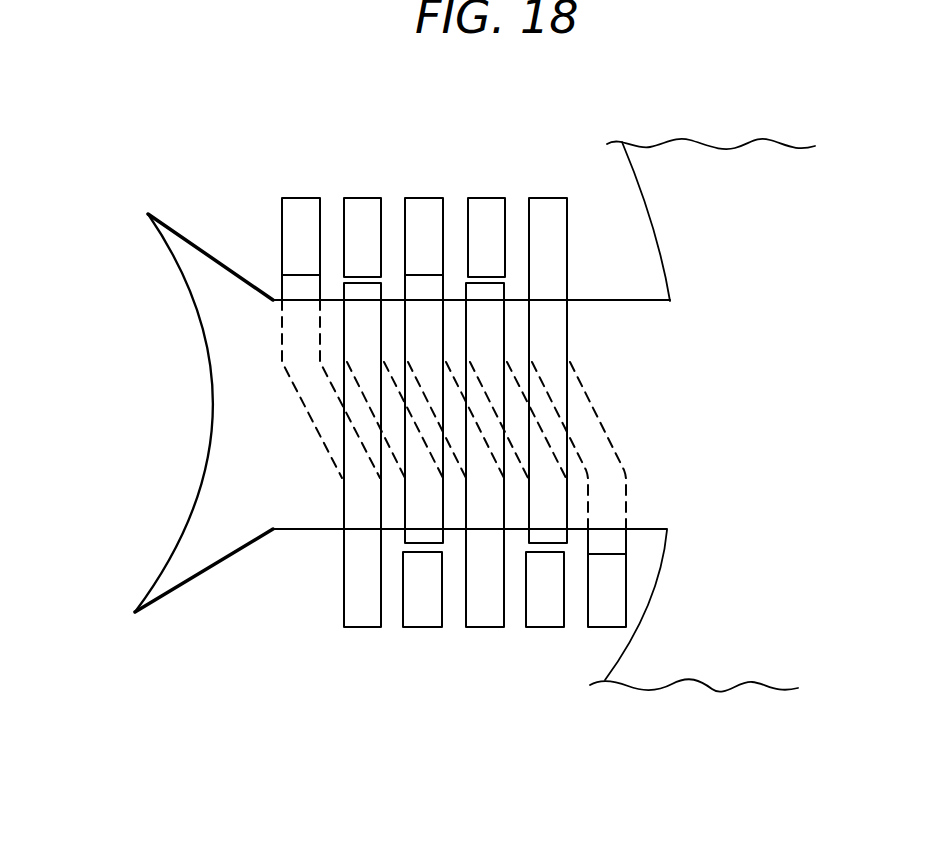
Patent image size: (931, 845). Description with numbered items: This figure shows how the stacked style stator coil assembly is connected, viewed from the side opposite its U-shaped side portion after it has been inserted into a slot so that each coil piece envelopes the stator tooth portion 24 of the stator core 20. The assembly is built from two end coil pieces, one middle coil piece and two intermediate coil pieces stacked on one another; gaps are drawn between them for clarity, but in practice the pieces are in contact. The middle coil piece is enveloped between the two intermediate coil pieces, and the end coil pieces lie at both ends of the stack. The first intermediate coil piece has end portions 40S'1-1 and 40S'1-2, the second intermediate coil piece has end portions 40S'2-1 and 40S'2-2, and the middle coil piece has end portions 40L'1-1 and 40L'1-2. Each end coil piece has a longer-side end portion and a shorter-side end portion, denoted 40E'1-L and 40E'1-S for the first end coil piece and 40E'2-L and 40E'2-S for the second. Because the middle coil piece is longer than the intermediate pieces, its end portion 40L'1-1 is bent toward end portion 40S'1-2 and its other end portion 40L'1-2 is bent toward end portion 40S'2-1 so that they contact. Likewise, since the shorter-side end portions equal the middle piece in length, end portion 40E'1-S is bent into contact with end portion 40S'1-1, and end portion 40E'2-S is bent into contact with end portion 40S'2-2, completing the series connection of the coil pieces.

The stator core 20 is at (700, 160).
The stator tooth portion 24 is at (265, 420).
The longer-side end portion of end coil piece 40E'1-L is at (287, 218).
The end portion of intermediate coil piece 40S'1-1 is at (388, 185).
The end portion of intermediate coil piece 40S'2-1 is at (492, 206).
The shorter-side end portion of end coil piece 40E'1-S is at (220, 455).
The end portion of middle coil piece 40L'1-1 is at (255, 370).
The end portion of middle coil piece 40L'1-2 is at (580, 455).
The shorter-side end portion of end coil piece 40E'2-S is at (655, 370).
The end portion of intermediate coil piece 40S'1-2 is at (399, 628).
The end portion of intermediate coil piece 40S'2-2 is at (518, 532).
The longer-side end portion of end coil piece 40E'2-L is at (587, 639).